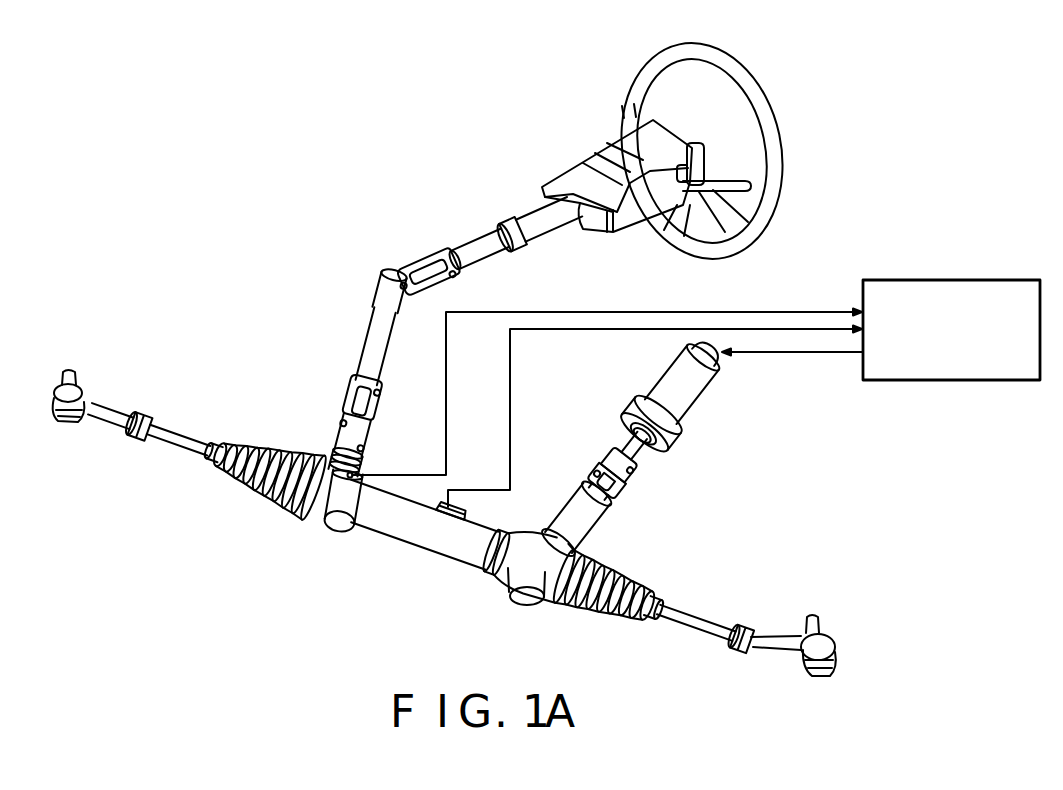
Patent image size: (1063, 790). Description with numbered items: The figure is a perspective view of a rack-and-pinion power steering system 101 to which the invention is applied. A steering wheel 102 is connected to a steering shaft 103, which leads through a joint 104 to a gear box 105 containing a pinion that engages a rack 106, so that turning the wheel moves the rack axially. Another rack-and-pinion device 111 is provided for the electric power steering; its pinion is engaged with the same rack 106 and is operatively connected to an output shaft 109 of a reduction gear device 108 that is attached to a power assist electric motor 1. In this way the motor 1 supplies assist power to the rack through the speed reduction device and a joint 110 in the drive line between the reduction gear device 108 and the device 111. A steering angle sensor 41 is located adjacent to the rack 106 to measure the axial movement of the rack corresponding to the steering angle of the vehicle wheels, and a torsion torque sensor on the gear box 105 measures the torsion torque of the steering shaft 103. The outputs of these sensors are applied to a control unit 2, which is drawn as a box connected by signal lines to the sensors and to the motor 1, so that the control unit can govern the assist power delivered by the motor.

The steering system 101 is at (343, 264).
The steering wheel 102 is at (752, 88).
The steering shaft 103 is at (478, 238).
The joint 104 is at (405, 262).
The steering angle sensor 41 is at (333, 470).
The gear box 105 is at (330, 513).
The rack 106 is at (430, 541).
The rack-and-pinion device 111 is at (518, 573).
The output shaft 109 is at (626, 447).
The universal joint 110 is at (622, 500).
The reduction gear device 108 is at (680, 437).
The power assist electric motor 1 is at (697, 391).
The control unit 2 is at (955, 382).